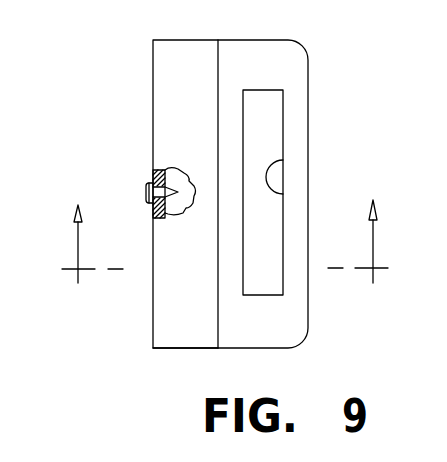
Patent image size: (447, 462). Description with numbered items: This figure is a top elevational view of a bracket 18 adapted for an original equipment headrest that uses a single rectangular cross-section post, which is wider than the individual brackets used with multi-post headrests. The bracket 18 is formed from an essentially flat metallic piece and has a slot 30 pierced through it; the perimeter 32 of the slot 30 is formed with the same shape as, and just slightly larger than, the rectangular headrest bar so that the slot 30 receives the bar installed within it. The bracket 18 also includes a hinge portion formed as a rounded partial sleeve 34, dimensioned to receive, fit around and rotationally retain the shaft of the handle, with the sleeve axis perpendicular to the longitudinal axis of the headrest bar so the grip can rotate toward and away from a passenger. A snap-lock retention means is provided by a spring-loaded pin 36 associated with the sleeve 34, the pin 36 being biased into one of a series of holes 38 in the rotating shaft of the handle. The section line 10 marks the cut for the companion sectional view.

The section line 10- 10 is at (225, 250).
The bracket 18 is at (283, 67).
The slot 30 is at (285, 134).
The perimeter 32 is at (283, 194).
The rounded partial sleeve 34 is at (186, 349).
The spring-loaded pin 36 is at (148, 188).
The holes 38 is at (168, 203).